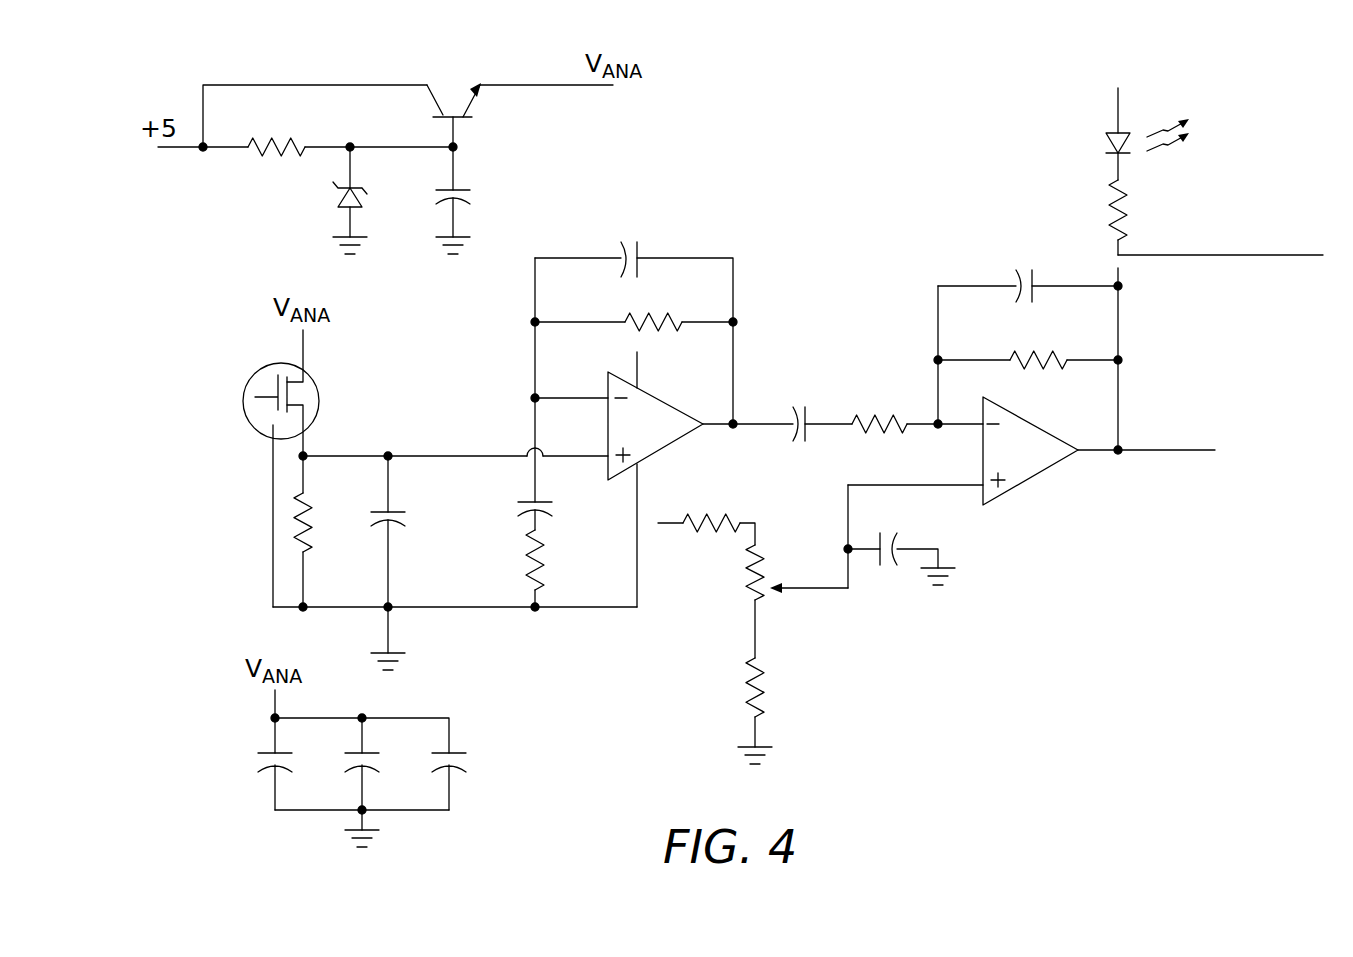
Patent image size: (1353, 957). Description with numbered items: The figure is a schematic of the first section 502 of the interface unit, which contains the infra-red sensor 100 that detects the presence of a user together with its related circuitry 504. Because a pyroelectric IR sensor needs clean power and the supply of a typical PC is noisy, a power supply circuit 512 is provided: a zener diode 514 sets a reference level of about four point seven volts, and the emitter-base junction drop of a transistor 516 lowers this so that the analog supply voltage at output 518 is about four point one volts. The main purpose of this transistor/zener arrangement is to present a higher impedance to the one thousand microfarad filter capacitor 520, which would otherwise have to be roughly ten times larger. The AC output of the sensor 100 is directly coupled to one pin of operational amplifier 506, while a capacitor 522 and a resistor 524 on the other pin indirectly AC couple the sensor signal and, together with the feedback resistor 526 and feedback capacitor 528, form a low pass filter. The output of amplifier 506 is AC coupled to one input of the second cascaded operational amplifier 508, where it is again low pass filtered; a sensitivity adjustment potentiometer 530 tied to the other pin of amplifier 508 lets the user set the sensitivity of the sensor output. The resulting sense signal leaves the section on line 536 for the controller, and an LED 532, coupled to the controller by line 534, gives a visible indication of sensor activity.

The sensor 100 is at (243, 395).
The section 502 is at (945, 175).
The related circuitry 504 is at (733, 222).
The operational amplifier 506 is at (648, 392).
The operational amplifier 508 is at (1038, 475).
The circuit 512 is at (348, 77).
The zener diode 514 is at (338, 203).
The transistor 516 is at (467, 120).
The output 518 is at (542, 85).
The filter capacitor 520 is at (463, 193).
The capacitor 522 is at (522, 502).
The resistor 524 is at (523, 565).
The feedback component 526 is at (628, 318).
The feedback component 528 is at (628, 242).
The sensitivity adjustment potentiometer 530 is at (763, 593).
The LED 532 is at (1135, 117).
The line 534 is at (1223, 255).
The line 536 is at (1152, 450).